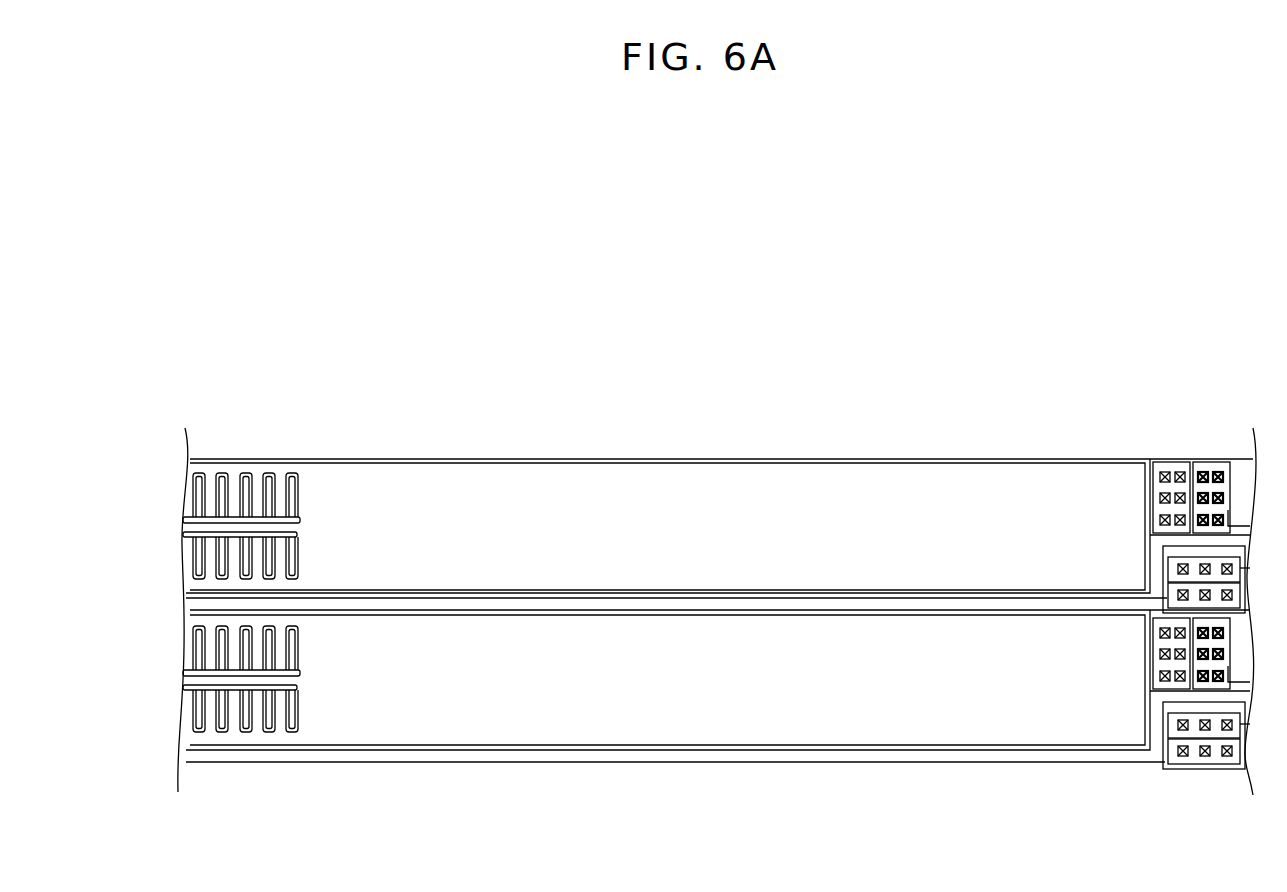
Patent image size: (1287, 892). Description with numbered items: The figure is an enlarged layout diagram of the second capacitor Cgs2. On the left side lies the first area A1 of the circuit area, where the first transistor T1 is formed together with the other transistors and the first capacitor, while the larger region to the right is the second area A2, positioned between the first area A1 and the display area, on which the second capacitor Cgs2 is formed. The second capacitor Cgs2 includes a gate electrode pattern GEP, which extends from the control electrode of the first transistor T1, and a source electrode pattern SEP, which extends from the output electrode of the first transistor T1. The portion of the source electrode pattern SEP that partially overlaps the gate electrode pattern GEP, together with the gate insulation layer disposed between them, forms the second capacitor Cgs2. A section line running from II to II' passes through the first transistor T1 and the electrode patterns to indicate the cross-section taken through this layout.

The first area A1 is at (296, 375).
The second area A2 is at (1250, 375).
The second capacitor Cgs2 is at (672, 503).
The gate electrode pattern GEP is at (892, 460).
The source electrode pattern SEP is at (999, 460).
The first transistor T1 is at (255, 712).
The section line II is at (336, 559).
The section line II' is at (603, 559).